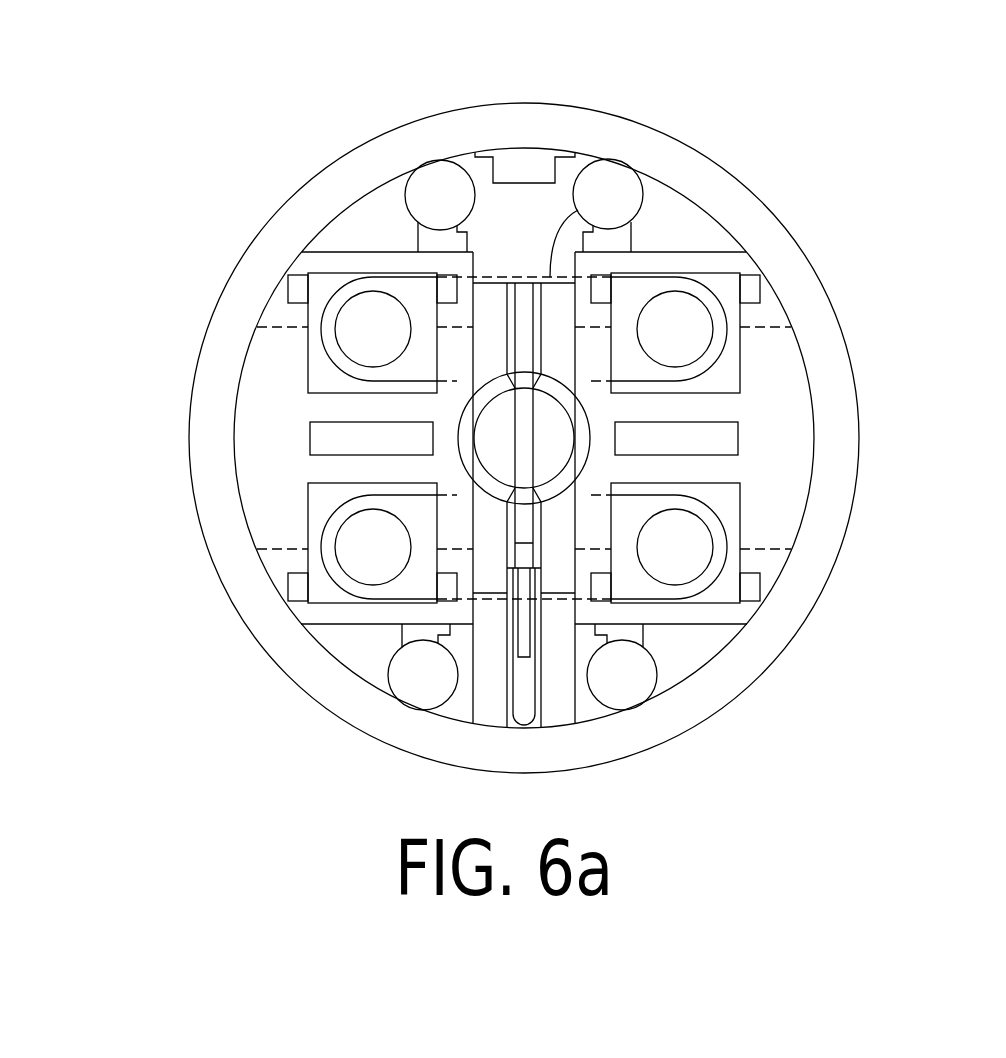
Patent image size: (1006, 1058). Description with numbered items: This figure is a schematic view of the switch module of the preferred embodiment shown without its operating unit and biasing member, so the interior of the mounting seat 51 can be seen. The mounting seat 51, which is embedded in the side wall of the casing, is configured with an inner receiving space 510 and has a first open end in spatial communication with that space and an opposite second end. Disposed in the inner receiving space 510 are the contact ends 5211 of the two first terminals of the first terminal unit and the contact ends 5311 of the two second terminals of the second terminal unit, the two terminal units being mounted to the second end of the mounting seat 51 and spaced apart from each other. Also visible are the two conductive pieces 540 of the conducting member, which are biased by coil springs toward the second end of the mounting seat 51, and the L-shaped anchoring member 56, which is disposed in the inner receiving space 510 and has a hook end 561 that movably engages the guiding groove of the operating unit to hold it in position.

The mounting seat 51 is at (818, 280).
The inner receiving space 510 is at (295, 430).
The contact end 5311 is at (370, 332).
The contact end 5211 is at (672, 312).
The conductive piece 540 is at (593, 198).
The anchoring member 56 is at (537, 447).
The hook end 561 is at (523, 677).